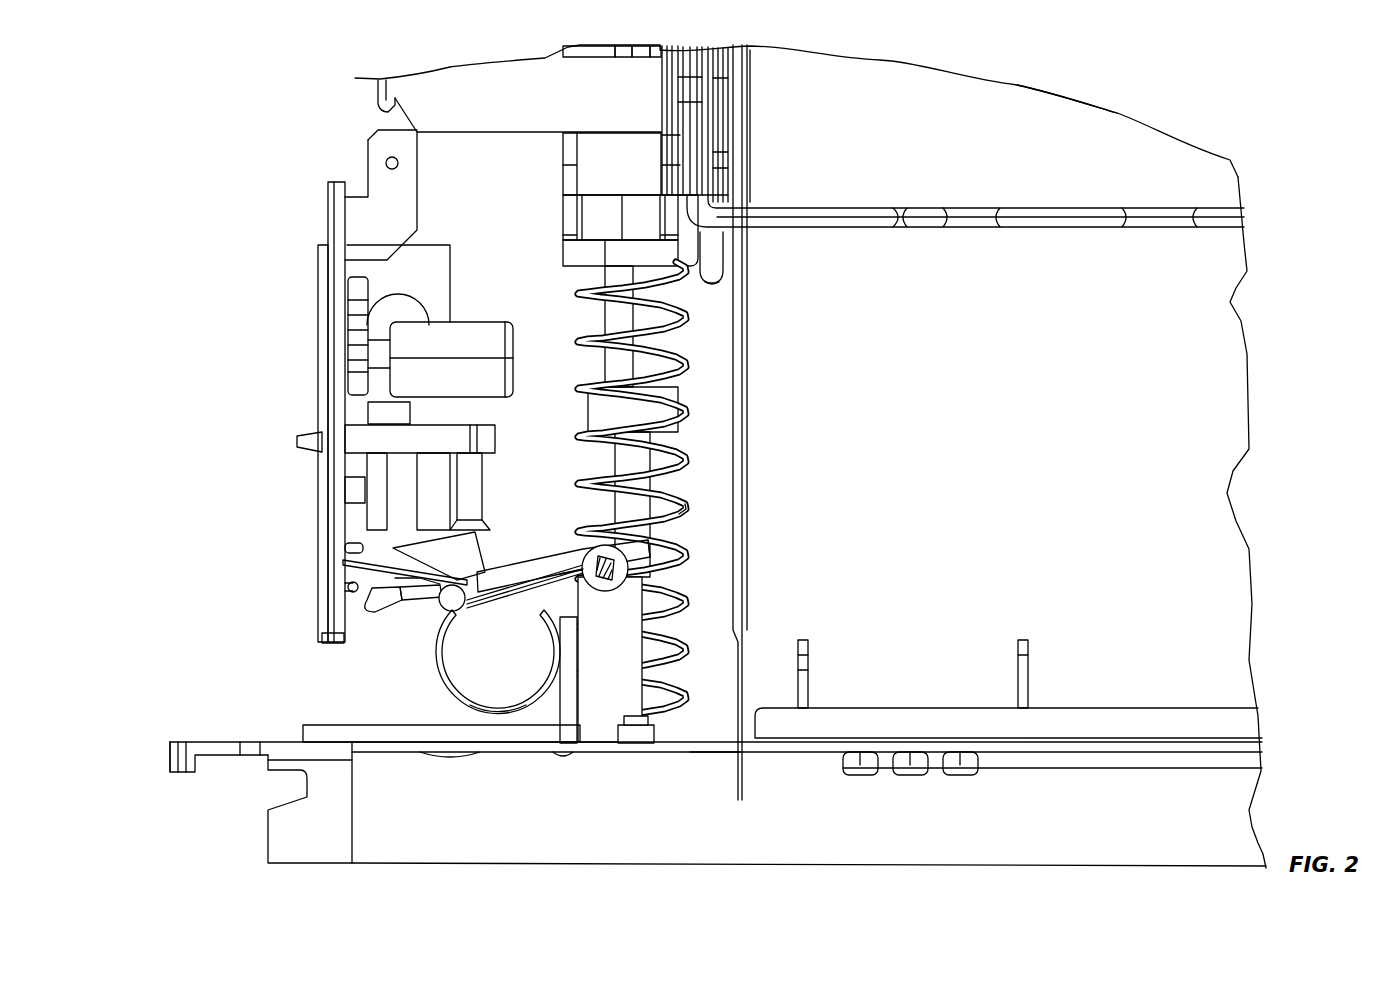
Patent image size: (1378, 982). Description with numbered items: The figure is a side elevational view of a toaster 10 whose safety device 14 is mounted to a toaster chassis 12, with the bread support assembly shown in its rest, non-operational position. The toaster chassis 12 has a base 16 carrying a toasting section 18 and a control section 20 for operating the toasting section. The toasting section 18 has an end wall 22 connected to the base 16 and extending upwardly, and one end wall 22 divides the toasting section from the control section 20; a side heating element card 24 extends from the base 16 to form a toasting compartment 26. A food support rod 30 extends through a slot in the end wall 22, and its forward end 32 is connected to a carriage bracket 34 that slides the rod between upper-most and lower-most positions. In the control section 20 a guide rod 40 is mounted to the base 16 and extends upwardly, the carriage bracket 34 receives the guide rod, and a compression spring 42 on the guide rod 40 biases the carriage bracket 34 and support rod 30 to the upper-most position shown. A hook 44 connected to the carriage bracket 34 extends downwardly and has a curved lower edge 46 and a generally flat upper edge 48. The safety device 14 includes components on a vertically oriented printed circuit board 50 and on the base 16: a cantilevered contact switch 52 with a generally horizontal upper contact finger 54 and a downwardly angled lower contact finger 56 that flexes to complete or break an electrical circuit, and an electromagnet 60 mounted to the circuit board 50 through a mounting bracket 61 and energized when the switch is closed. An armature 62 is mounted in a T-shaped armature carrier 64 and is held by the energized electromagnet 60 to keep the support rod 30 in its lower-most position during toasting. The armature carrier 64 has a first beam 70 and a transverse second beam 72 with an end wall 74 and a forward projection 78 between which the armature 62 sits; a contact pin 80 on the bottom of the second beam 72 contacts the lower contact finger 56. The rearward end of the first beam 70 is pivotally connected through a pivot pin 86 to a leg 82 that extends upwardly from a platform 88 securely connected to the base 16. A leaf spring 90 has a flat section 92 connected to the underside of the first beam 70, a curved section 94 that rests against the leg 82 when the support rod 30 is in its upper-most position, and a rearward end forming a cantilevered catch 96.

The toaster 10 is at (300, 172).
The toaster chassis 12 is at (205, 832).
The safety device 14 is at (300, 672).
The base 16 is at (420, 852).
The toasting section 18 is at (928, 84).
The control section 20 is at (440, 88).
The end wall 22 is at (745, 433).
The side heating element card 24 is at (1003, 92).
The toasting compartment 26 is at (1078, 692).
The food support rod 30 is at (1052, 228).
The forward end 32 is at (692, 60).
The carriage bracket 34 is at (378, 101).
The guide rod 40 is at (646, 453).
The compression spring 42 is at (672, 495).
The hook 44 is at (708, 248).
The curved lower edge 46 is at (708, 276).
The flat upper edge 48 is at (695, 262).
The printed circuit board 50 is at (336, 197).
The contact switch 52 is at (428, 594).
The upper contact finger 54 is at (383, 550).
The lower contact finger 56 is at (445, 580).
The electromagnet 60 is at (450, 490).
The mounting bracket 61 is at (352, 432).
The armature 62 is at (398, 598).
The armature carrier 64 is at (553, 550).
The first beam 70 is at (562, 580).
The second beam 72 is at (412, 596).
The end wall 74 is at (465, 547).
The forward projection 78 is at (377, 585).
The contact pin 80 is at (455, 606).
The leg 82 is at (620, 643).
The pivot pin 86 is at (612, 565).
The platform 88 is at (420, 740).
The leaf spring 90 is at (519, 722).
The flat section 92 is at (545, 590).
The curved section 94 is at (440, 672).
The cantilevered catch 96 is at (690, 560).